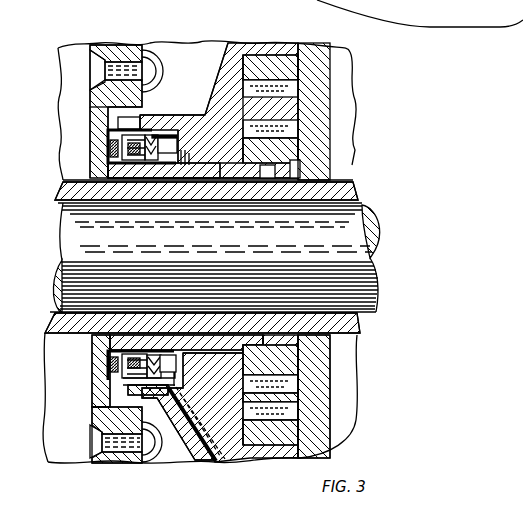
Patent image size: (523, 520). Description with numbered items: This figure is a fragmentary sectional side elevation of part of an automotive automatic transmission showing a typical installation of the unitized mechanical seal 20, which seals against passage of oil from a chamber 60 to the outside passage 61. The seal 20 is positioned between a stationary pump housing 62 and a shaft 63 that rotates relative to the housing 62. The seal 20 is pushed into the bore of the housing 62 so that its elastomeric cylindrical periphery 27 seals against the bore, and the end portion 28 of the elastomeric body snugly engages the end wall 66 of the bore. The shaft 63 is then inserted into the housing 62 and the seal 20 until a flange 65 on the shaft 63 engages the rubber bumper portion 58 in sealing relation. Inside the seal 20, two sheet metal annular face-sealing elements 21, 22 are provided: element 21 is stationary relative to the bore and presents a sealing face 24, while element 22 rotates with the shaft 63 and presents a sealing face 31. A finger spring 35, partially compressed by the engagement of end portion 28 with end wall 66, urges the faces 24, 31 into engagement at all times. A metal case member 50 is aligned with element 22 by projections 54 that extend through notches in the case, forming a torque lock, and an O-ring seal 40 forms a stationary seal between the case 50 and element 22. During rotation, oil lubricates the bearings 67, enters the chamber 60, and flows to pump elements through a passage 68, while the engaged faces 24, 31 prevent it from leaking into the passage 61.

The unitized mechanical seal 20 is at (128, 176).
The annular face-sealing element 21 is at (219, 111).
The annular face-sealing element 22 is at (142, 133).
The sealing face 24 is at (138, 129).
The cylindrical periphery 27 is at (165, 135).
The end portion of elastomeric body 28 is at (202, 399).
The sealing face 31 is at (152, 363).
The finger spring 35 is at (112, 147).
The O-ring seal 40 is at (137, 350).
The metal case member 50 is at (152, 165).
The projections 54 is at (108, 129).
The rubber bumper portion 58 is at (104, 152).
The chamber 60 is at (178, 165).
The outside passage 61 is at (197, 48).
The pump housing 62 is at (206, 118).
The shaft 63 is at (218, 222).
The flange 65 is at (98, 368).
The end wall 66 is at (170, 150).
The bearings 67 is at (220, 168).
The passage 68 is at (198, 426).